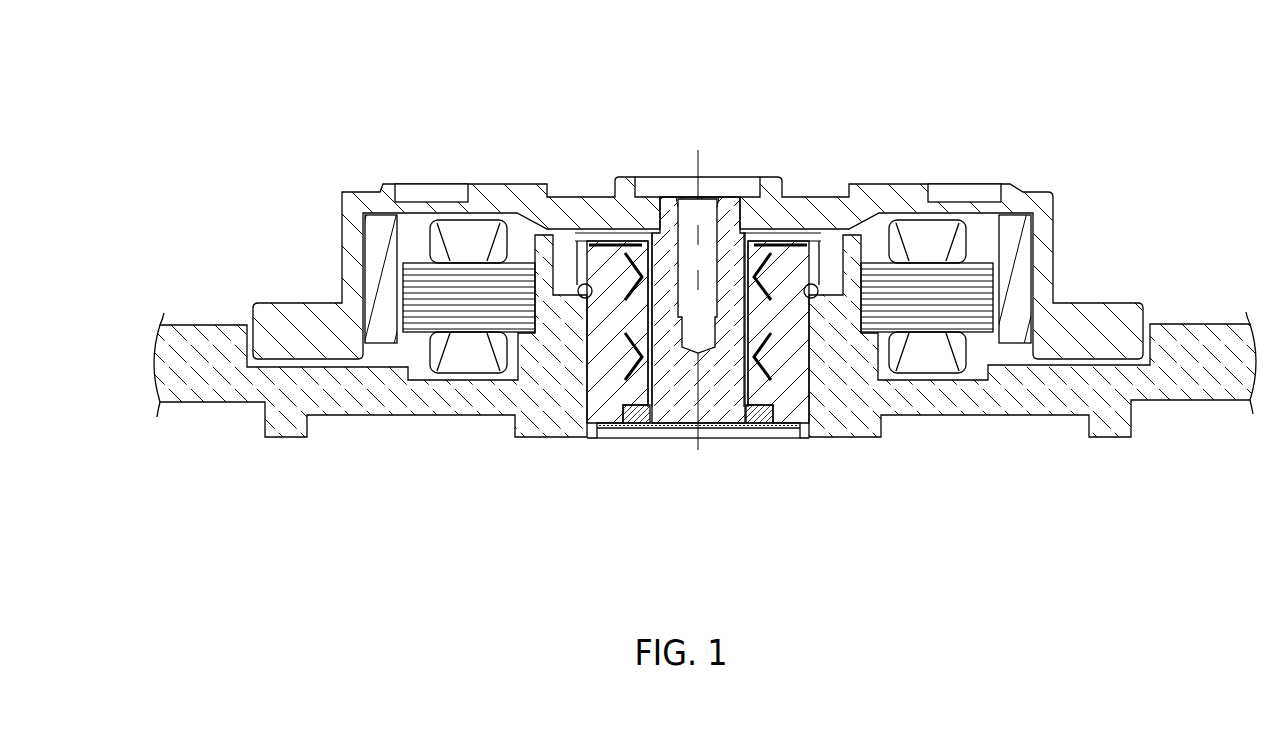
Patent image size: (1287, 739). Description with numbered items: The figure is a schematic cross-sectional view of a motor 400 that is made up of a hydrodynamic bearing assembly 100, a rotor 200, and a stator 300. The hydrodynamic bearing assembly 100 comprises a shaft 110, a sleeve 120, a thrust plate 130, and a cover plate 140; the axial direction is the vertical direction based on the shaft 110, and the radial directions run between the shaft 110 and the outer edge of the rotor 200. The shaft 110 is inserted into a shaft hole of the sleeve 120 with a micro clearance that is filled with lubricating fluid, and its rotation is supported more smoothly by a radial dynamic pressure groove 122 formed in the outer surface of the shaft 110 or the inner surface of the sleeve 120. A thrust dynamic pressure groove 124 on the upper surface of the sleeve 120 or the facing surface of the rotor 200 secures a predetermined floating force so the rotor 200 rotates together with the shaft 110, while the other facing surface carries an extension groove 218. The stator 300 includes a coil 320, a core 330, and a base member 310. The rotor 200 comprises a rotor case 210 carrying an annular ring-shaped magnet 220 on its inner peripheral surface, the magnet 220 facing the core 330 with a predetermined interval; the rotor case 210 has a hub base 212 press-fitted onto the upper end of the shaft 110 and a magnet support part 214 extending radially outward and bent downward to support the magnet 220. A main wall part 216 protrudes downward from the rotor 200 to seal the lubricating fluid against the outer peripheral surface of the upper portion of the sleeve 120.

The motor 400 is at (722, 46).
The hydrodynamic bearing assembly 100 is at (604, 449).
The shaft 110 is at (725, 405).
The sleeve 120 is at (783, 405).
The radial dynamic pressure groove 122 is at (593, 257).
The thrust dynamic pressure groove 124 is at (777, 243).
The thrust plate 130 is at (643, 425).
The cover plate 140 is at (683, 428).
The rotor 200 is at (966, 158).
The rotor case 210 is at (1157, 185).
The hub base 212 is at (1040, 203).
The magnet support part 214 is at (1043, 242).
The main wall part 216 is at (830, 270).
The extension groove 218 is at (800, 225).
The annular ring-shaped magnet 220 is at (1028, 277).
The stator 300 is at (547, 512).
The base member 310 is at (547, 400).
The coil 320 is at (468, 360).
The core 330 is at (423, 320).